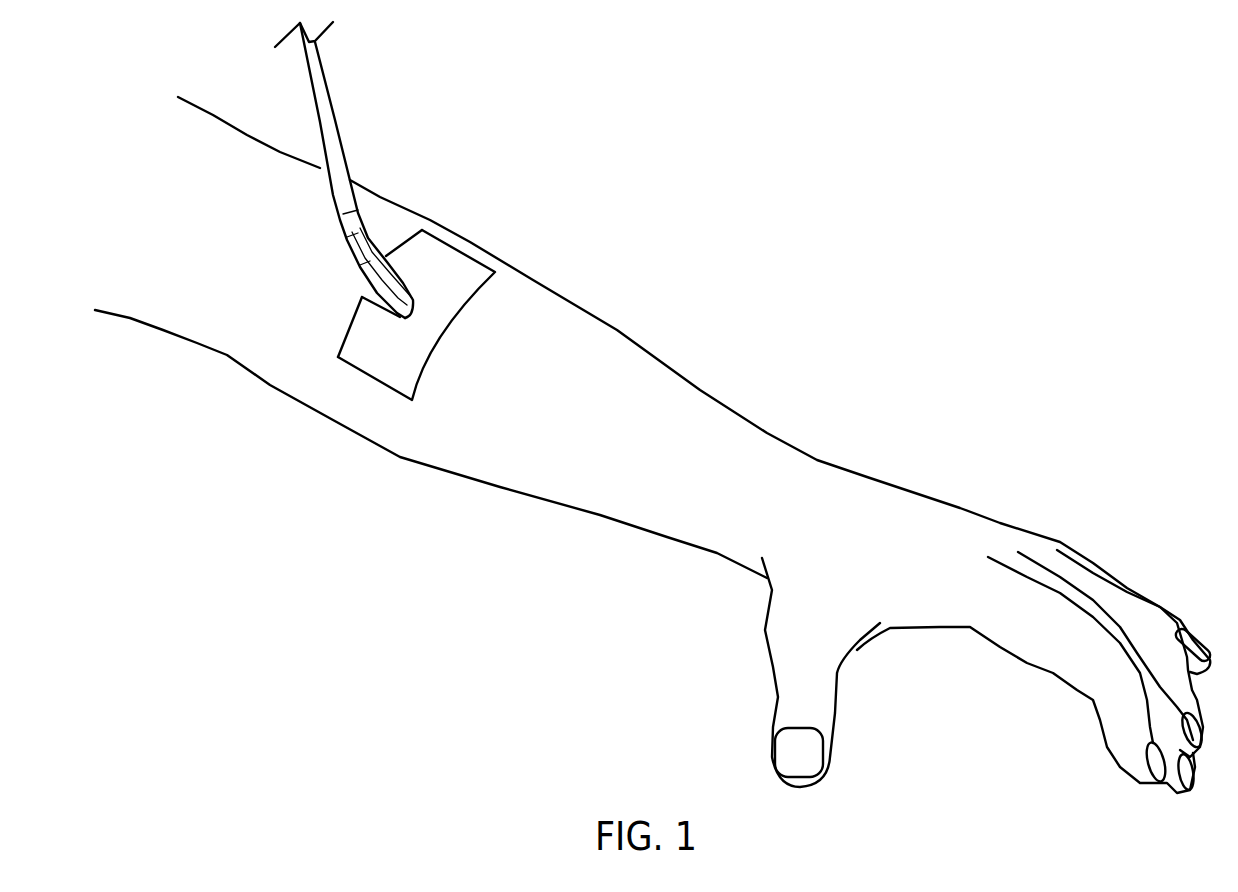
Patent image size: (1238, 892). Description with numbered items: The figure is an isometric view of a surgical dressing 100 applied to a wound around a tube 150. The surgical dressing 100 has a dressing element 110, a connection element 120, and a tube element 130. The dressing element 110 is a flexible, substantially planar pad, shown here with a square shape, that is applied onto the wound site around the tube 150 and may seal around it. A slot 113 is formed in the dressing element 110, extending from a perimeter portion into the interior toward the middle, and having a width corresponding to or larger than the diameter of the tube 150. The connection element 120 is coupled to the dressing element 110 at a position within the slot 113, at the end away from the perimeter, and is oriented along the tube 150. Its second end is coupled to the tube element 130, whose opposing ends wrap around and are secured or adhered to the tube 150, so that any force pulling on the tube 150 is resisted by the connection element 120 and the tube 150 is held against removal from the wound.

The surgical dressing 100 is at (477, 318).
The dressing element 110 is at (423, 327).
The slot 113 is at (360, 288).
The connection element 120 is at (377, 305).
The tube element 130 is at (353, 223).
The tube 150 is at (327, 128).